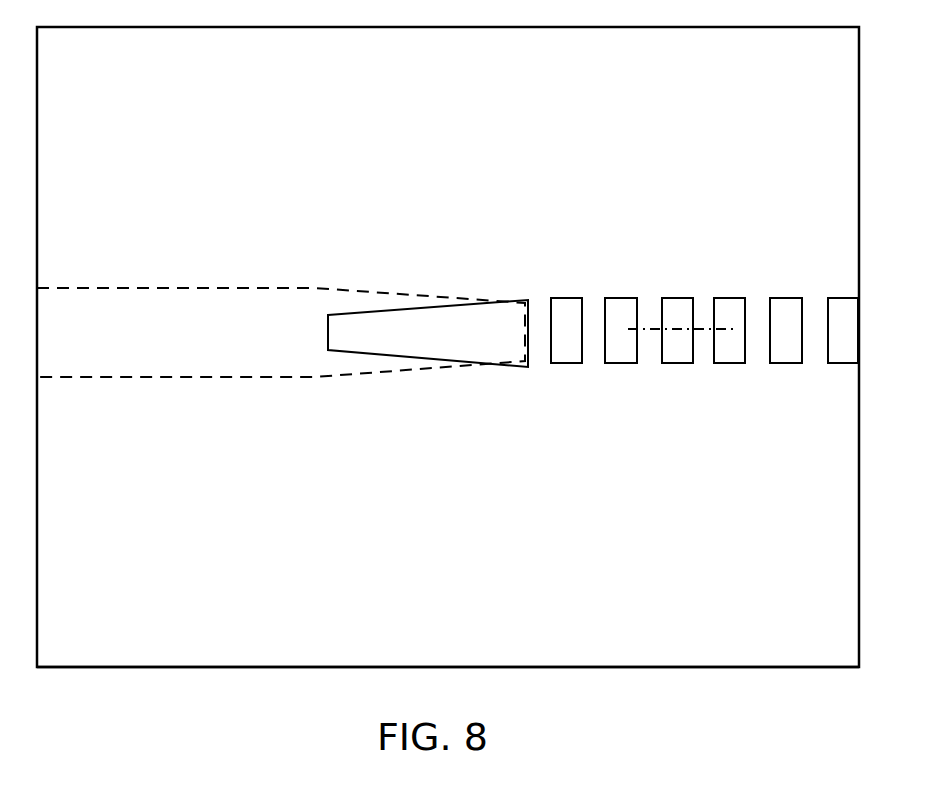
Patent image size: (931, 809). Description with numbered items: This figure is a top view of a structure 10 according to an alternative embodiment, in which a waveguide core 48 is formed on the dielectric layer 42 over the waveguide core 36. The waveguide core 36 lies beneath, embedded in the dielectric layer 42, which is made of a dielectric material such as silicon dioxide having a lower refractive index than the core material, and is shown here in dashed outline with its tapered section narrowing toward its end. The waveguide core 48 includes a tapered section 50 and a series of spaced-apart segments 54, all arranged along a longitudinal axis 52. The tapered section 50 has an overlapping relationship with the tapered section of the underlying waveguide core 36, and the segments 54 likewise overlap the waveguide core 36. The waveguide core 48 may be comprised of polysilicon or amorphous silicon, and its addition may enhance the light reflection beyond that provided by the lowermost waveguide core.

The probe assembly 10 is at (147, 105).
The waveguide core 36 is at (158, 420).
The dielectric layer 42 is at (108, 619).
The waveguide core 48 is at (636, 247).
The tapered section 50 is at (458, 328).
The longitudinal axis 52 is at (672, 340).
The spaced-apart segments 54 is at (568, 345).